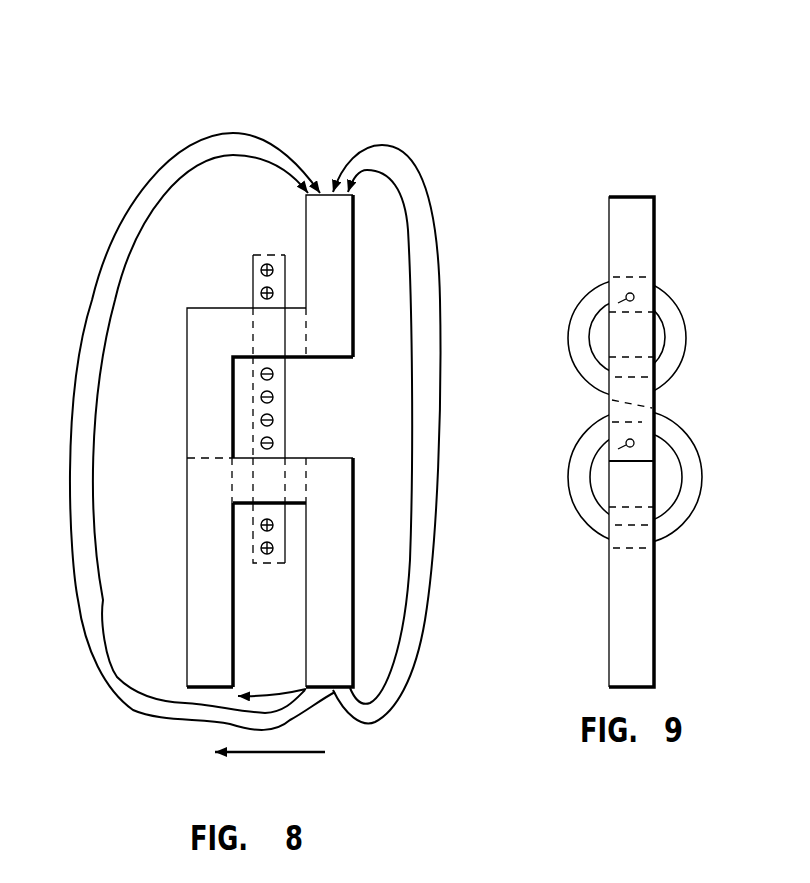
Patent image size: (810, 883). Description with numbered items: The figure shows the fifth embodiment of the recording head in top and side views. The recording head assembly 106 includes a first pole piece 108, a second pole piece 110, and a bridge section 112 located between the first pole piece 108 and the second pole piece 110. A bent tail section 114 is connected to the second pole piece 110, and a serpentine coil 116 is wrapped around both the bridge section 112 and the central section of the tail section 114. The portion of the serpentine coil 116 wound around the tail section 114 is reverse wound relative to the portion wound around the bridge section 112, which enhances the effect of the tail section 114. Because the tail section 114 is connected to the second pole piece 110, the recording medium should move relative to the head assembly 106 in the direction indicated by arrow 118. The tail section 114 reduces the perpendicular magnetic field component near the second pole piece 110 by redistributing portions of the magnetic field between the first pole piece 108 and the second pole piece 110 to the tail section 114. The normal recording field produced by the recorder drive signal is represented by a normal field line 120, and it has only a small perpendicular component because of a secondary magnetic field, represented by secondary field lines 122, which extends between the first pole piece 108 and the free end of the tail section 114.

In FIG. 8, the recording head assembly 106 is at (290, 118).
In FIG. 9, the recording head assembly 106 is at (655, 168).
In FIG. 8, the first pole piece 108 is at (354, 556).
In FIG. 8, the second pole piece 110 is at (186, 577).
In FIG. 9, the second pole piece 110 is at (656, 601).
In FIG. 8, the bridge section 112 is at (297, 458).
In FIG. 8, the bent tail section 114 is at (354, 277).
In FIG. 9, the bent tail section 114 is at (656, 233).
In FIG. 8, the serpentine coil 116 is at (252, 270).
In FIG. 9, the serpentine coil 116 is at (683, 317).
In FIG. 8, the arrow 118 is at (282, 755).
In FIG. 8, the normal field line 120 is at (258, 694).
In FIG. 8, the secondary field lines 122 is at (122, 707).